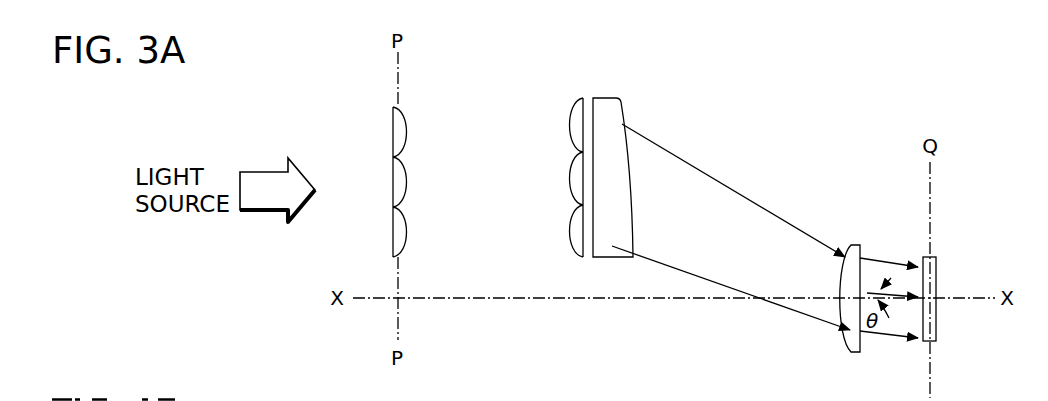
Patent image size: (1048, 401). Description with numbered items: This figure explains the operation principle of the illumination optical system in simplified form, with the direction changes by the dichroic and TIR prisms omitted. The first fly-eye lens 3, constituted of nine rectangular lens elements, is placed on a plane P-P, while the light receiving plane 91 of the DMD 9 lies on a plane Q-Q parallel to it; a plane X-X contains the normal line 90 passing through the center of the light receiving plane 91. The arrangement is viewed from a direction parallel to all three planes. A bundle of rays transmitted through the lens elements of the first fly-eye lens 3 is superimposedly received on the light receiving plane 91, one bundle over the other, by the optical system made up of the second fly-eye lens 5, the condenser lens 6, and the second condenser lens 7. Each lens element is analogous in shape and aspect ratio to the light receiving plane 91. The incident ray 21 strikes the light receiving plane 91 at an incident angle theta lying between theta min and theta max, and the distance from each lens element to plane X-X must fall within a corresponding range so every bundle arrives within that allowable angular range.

The first fly-eye lens 3 is at (393, 127).
The second fly-eye lens 5 is at (579, 98).
The condenser lens 6 is at (606, 104).
The second condenser lens 7 is at (855, 245).
The DMD 9 is at (937, 272).
The incident ray 21 is at (872, 292).
The normal line 90 is at (727, 301).
The light receiving plane 91 is at (922, 317).